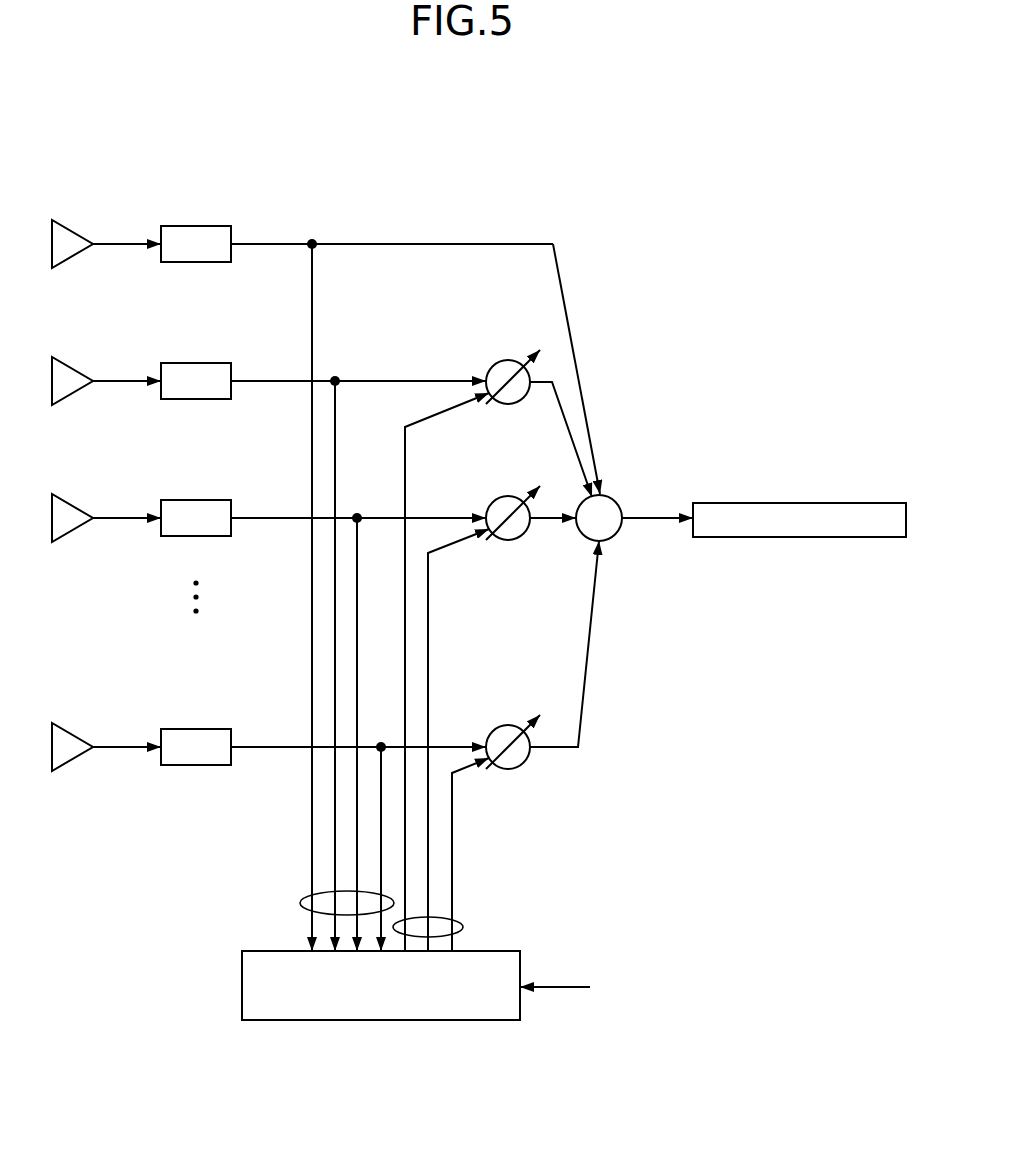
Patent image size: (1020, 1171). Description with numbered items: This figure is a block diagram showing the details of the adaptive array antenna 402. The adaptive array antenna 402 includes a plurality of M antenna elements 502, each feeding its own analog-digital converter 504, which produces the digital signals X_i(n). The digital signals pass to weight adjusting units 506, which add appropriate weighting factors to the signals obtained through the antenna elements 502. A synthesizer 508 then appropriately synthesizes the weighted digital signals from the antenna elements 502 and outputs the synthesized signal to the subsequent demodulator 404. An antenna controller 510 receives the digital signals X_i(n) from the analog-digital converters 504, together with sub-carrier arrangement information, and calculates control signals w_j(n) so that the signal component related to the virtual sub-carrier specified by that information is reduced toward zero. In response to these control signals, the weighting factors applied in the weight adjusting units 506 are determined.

The adaptive array antenna 402 is at (113, 110).
The demodulator 404 is at (828, 503).
The antenna element 502 is at (78, 230).
The analog-digital converter 504 is at (196, 226).
The weight adjusting unit 506 is at (505, 360).
The synthesizer 508 is at (618, 500).
The antenna controller 510 is at (382, 1021).